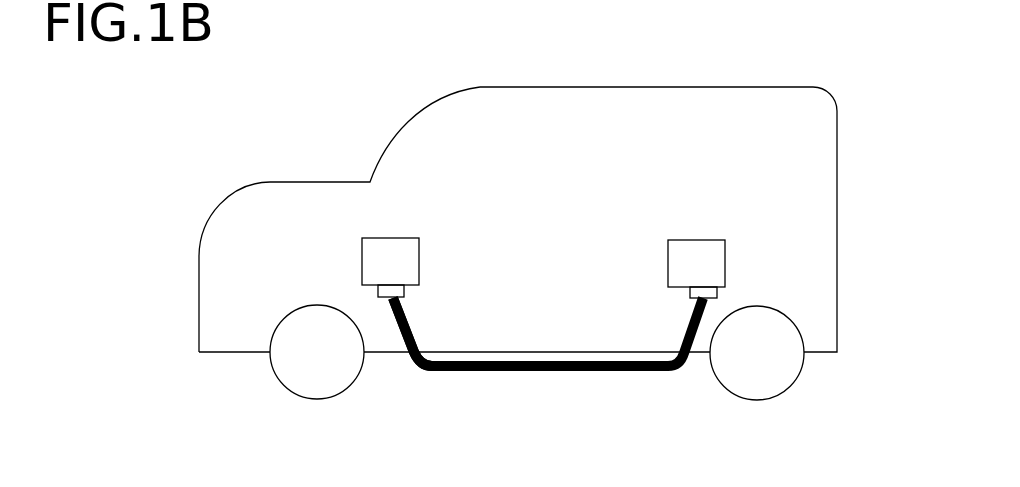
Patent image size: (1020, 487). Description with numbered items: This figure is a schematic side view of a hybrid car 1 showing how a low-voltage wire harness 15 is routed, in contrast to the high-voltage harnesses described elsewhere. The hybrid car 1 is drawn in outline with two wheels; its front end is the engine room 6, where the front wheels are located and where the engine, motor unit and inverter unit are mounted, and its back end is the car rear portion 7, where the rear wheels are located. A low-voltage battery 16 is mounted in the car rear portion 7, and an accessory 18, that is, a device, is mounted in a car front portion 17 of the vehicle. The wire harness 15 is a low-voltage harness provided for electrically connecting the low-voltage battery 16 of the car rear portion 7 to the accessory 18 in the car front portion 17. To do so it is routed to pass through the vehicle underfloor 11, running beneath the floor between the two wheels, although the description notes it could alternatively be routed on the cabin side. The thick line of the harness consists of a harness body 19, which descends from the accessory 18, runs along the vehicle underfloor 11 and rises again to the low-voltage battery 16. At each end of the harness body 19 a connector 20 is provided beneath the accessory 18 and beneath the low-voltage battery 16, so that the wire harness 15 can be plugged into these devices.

The hybrid car 1 is at (677, 87).
The engine room 6 is at (217, 327).
The car rear portion 7 is at (817, 322).
The vehicle underfloor 11 is at (623, 360).
The wire harness 15 is at (450, 372).
The low-voltage battery 16 is at (705, 248).
The car front portion 17 is at (342, 195).
The accessory 18 is at (404, 247).
The harness body 19 is at (414, 334).
The connector 20 is at (378, 288).